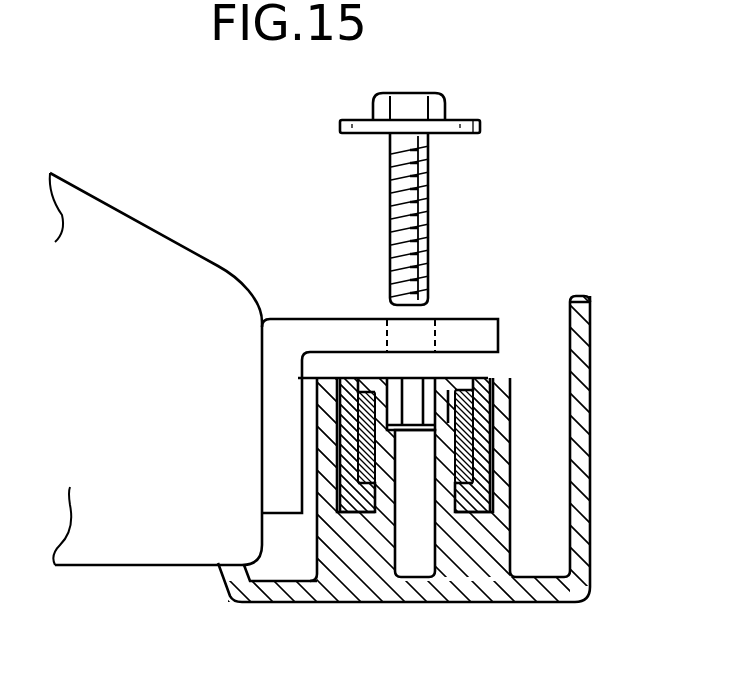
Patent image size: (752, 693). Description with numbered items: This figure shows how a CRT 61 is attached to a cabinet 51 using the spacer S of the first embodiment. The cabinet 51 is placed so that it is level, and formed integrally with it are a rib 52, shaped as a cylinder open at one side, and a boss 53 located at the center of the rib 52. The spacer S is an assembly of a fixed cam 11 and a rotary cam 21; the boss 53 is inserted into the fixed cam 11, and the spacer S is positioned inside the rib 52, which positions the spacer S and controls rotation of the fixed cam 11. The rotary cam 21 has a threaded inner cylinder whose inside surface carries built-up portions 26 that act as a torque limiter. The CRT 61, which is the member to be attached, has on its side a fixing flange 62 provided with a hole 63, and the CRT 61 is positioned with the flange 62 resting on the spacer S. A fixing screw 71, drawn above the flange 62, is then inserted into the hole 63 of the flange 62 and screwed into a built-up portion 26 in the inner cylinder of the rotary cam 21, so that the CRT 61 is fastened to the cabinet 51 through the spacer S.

The fixed cam 11 is at (357, 497).
The rotary cam 21 is at (502, 368).
The built-up portion 26 is at (434, 388).
The cabinet 51 is at (372, 583).
The rib 52 is at (512, 446).
The boss 53 is at (438, 480).
The CRT 61 is at (122, 250).
The fixing flange 62 is at (292, 327).
The hole 63 is at (443, 318).
The fixing screw 71 is at (437, 108).
The spacer S is at (355, 377).